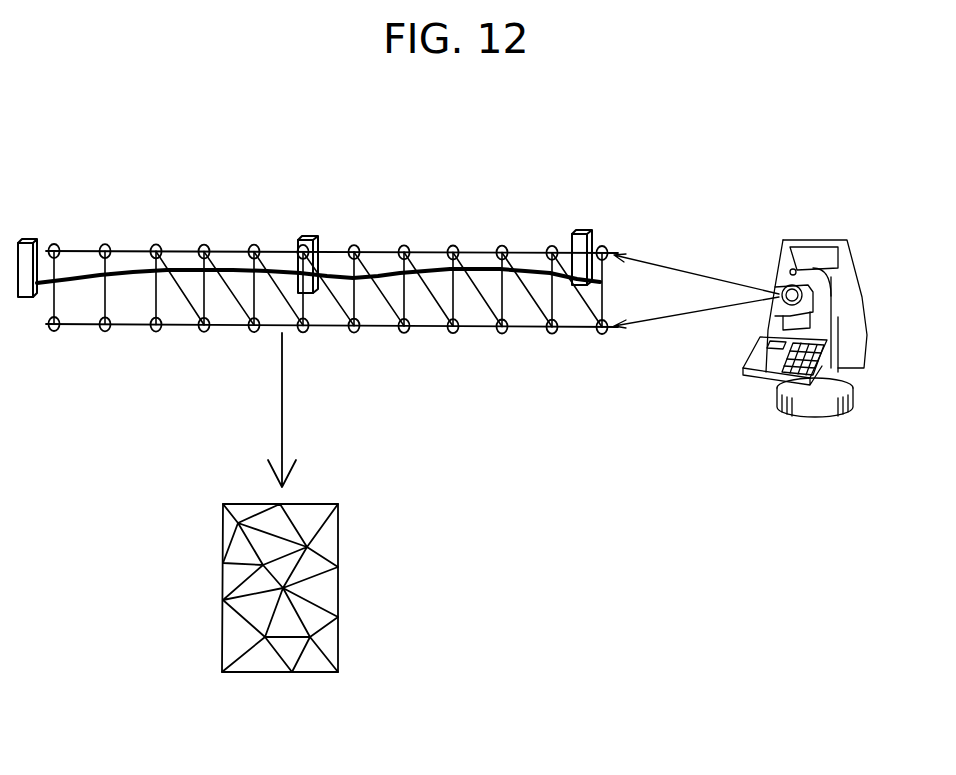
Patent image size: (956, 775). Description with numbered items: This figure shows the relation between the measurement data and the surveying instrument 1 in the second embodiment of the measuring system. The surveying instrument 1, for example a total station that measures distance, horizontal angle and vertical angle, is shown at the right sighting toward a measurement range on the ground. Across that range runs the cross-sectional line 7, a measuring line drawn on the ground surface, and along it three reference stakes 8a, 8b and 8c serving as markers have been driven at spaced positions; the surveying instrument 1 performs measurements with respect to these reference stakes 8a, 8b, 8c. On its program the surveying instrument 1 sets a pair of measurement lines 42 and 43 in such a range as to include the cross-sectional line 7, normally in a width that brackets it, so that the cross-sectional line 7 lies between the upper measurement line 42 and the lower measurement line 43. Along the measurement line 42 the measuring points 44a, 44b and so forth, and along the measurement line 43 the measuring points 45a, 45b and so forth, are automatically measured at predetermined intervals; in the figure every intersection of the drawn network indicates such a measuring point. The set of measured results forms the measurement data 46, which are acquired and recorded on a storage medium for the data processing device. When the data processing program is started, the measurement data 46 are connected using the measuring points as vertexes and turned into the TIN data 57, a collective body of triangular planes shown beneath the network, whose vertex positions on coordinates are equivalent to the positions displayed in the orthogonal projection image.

The surveying instrument 1 is at (805, 238).
The cross-sectional line 7 is at (432, 252).
The reference stake 8a is at (28, 240).
The reference stake 8b is at (318, 236).
The reference stake 8c is at (590, 235).
The measurement line 42 is at (480, 250).
The measurement line 43 is at (424, 330).
The measuring point 44a is at (205, 243).
The measuring point 44b is at (258, 243).
The measuring point 45a is at (205, 333).
The measuring point 45b is at (253, 334).
The measurement data 46 is at (526, 346).
The TIN data 57 is at (338, 588).